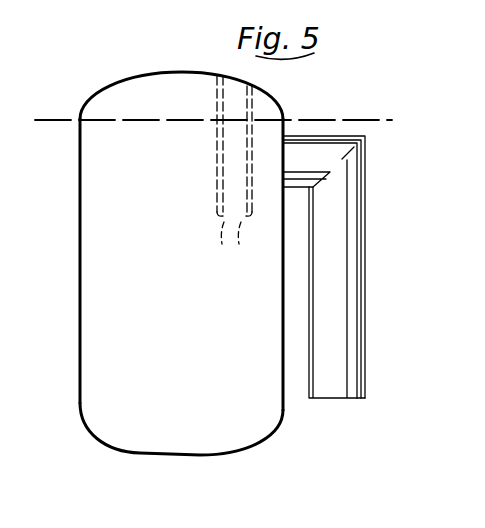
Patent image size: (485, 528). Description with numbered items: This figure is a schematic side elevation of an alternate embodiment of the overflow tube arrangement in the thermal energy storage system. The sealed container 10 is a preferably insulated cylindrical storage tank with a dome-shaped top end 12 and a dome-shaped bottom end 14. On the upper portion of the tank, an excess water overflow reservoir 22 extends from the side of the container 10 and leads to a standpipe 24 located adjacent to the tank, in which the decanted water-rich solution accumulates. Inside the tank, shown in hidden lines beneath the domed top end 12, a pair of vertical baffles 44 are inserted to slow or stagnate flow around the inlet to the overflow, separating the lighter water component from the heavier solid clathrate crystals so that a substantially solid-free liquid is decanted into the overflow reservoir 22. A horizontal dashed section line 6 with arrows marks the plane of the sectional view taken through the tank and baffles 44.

The sealed container 10 is at (71, 326).
The dome-shaped top end 12 is at (168, 73).
The dome-shaped bottom end 14 is at (140, 453).
The excess water overflow reservoir 22 is at (322, 142).
The standpipe 24 is at (340, 368).
The vertical baffles 44 is at (234, 176).
The section line 6- 6 is at (385, 144).